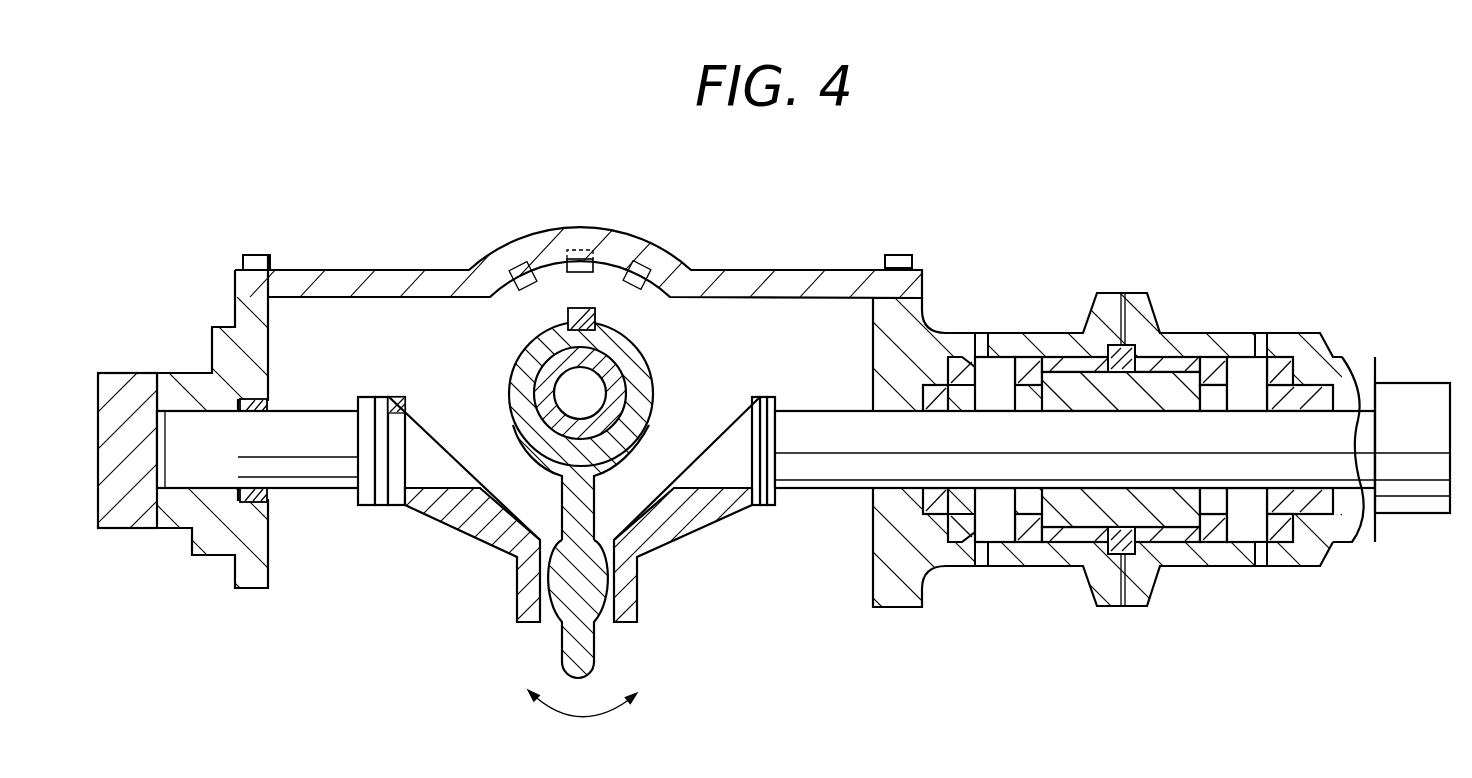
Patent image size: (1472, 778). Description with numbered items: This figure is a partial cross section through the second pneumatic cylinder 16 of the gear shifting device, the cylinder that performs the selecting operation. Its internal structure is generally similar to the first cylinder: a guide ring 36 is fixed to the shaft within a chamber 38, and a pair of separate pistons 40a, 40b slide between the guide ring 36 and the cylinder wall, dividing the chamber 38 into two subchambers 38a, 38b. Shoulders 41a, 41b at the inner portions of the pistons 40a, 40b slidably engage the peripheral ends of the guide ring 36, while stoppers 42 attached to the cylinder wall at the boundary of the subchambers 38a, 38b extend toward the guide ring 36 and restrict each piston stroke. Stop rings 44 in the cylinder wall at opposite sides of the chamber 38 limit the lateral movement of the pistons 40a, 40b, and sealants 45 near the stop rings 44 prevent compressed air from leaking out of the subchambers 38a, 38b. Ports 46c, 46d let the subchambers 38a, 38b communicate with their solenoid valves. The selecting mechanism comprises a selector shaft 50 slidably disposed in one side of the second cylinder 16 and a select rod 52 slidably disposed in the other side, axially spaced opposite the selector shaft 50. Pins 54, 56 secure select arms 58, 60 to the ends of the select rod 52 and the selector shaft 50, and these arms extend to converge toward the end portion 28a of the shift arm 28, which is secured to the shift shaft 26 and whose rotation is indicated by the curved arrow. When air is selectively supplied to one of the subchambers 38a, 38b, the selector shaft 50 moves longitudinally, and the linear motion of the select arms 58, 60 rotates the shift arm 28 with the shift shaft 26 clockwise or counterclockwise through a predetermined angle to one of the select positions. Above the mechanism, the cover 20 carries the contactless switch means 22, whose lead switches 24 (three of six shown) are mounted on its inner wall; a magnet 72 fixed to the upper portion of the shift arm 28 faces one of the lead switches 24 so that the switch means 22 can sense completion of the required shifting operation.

The second pneumatic cylinder 16 is at (1405, 362).
The cover 20 is at (687, 262).
The contactless switch means 22 is at (563, 230).
The lead switches 24 is at (518, 267).
The shift shaft 26 is at (545, 384).
The shift arm 28 is at (551, 430).
The end portion of the shift arm 28a is at (577, 613).
The guide ring 36 is at (1188, 512).
The chamber 38 is at (997, 390).
The first subchamber 38a is at (1000, 515).
The second subchamber 38b is at (1248, 525).
The first piston 40a is at (1060, 535).
The second piston 40b is at (1222, 540).
The first piston shoulder 41a is at (1043, 360).
The second piston shoulder 41b is at (1207, 360).
The stoppers 42 is at (1127, 345).
The stop rings 44 is at (1282, 365).
The sealants 45 is at (1325, 397).
The port 46c is at (978, 345).
The port 46d is at (1259, 345).
The selector shaft 50 is at (1325, 445).
The select rod 52 is at (310, 465).
The pin 54 is at (383, 488).
The pin 56 is at (769, 507).
The select arm 58 is at (507, 537).
The select arm 60 is at (668, 545).
The magnet 72 is at (585, 308).